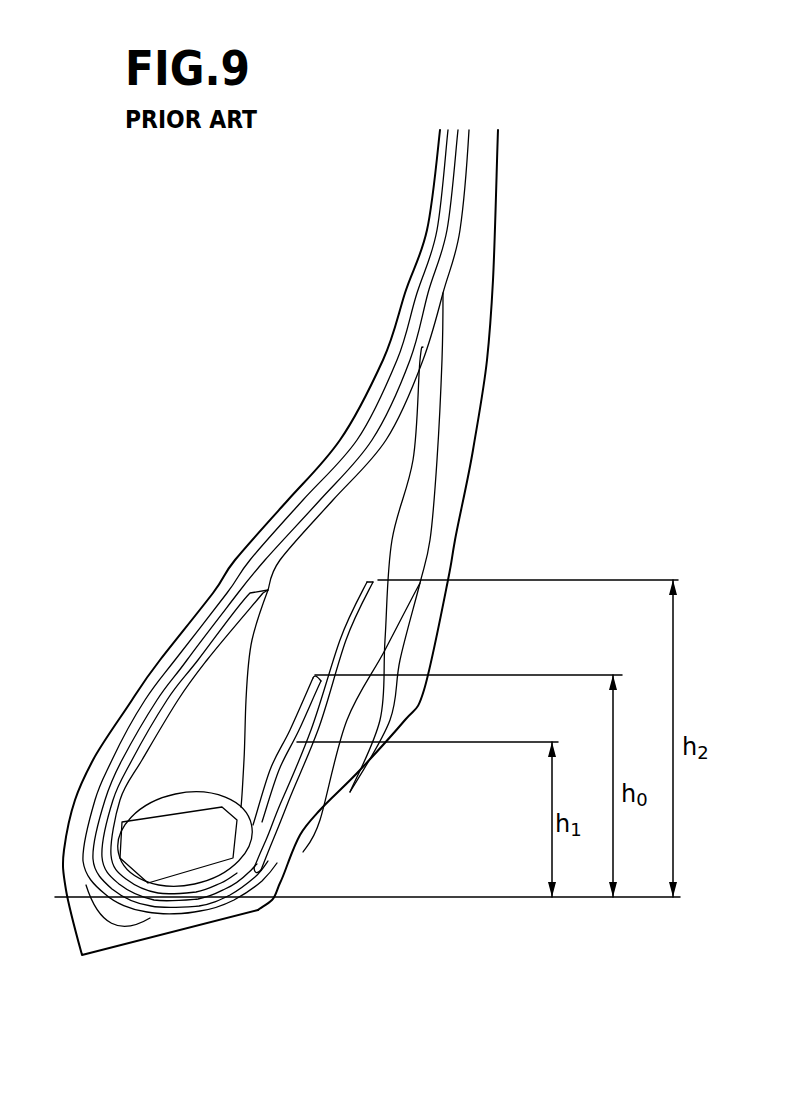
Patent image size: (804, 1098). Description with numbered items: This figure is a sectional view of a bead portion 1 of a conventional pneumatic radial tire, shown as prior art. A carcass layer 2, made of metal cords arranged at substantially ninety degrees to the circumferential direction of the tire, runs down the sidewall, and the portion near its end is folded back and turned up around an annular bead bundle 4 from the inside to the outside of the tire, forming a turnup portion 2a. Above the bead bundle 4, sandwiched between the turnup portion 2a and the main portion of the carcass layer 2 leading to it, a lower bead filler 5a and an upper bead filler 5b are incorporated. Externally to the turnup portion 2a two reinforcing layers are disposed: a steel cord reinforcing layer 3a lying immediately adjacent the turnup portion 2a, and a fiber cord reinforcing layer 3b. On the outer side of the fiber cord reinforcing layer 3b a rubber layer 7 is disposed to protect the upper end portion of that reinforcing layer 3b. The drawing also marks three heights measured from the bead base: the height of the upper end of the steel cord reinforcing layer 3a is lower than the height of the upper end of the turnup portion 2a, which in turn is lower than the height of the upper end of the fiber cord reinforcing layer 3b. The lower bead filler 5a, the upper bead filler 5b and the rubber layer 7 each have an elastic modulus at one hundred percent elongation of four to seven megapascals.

The bead portion 1 is at (490, 513).
The carcass layer 2 is at (330, 492).
The turnup portion 2a is at (318, 685).
The steel cord reinforcing layer 3a is at (253, 833).
The fiber cord reinforcing layer 3b is at (300, 783).
The annular bead bundle 4 is at (138, 840).
The lower bead filler 5a is at (193, 708).
The upper bead filler 5b is at (258, 672).
The rubber layer 7 is at (430, 383).